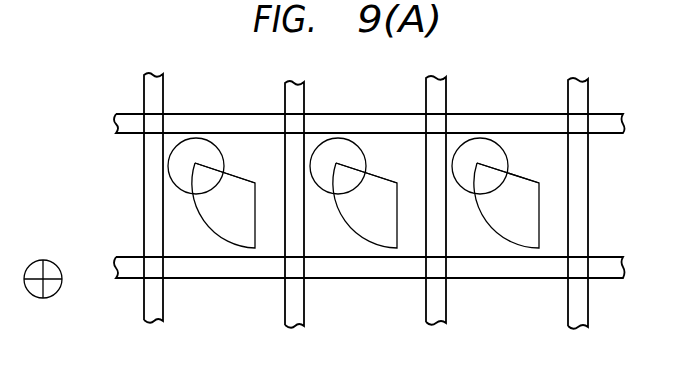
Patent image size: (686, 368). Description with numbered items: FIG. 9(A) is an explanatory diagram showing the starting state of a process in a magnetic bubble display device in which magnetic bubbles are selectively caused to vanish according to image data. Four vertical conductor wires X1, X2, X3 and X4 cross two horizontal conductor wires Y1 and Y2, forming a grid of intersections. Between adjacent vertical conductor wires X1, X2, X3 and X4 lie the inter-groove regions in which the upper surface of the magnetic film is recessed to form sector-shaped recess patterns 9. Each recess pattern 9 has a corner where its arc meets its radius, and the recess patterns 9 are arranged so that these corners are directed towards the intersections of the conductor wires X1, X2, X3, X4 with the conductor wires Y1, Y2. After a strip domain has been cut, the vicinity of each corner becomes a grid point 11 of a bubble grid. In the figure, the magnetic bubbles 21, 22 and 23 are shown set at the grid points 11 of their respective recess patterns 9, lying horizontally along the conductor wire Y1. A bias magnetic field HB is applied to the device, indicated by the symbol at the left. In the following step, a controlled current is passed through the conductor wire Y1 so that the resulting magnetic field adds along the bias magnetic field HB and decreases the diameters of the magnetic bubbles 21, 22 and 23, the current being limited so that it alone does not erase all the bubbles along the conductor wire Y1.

The conductor wire X1 is at (156, 82).
The conductor wire X2 is at (295, 90).
The conductor wire X3 is at (437, 88).
The conductor wire X4 is at (578, 92).
The conductor wire Y1 is at (615, 124).
The conductor wire Y2 is at (612, 266).
The sector-shaped recess pattern 9 is at (247, 213).
The grid point 11 is at (205, 175).
The magnetic bubble 21 is at (186, 184).
The magnetic bubble 22 is at (327, 184).
The magnetic bubble 23 is at (469, 184).
The bias magnetic field HB is at (47, 295).